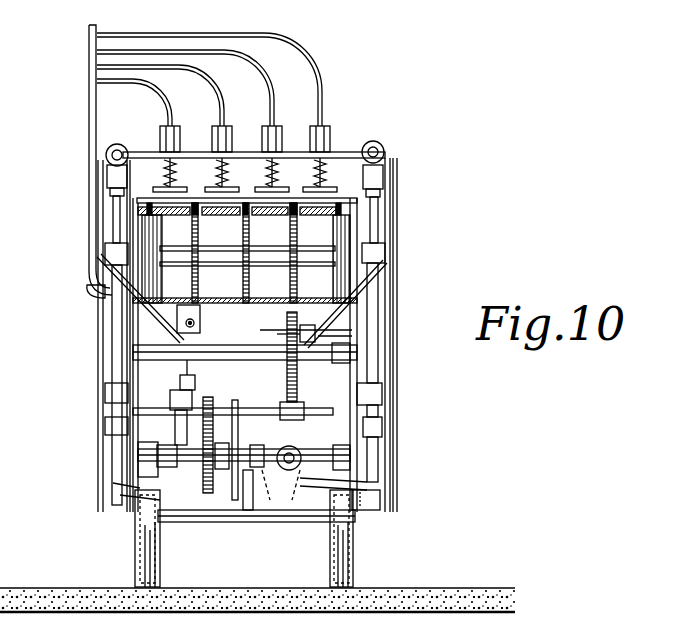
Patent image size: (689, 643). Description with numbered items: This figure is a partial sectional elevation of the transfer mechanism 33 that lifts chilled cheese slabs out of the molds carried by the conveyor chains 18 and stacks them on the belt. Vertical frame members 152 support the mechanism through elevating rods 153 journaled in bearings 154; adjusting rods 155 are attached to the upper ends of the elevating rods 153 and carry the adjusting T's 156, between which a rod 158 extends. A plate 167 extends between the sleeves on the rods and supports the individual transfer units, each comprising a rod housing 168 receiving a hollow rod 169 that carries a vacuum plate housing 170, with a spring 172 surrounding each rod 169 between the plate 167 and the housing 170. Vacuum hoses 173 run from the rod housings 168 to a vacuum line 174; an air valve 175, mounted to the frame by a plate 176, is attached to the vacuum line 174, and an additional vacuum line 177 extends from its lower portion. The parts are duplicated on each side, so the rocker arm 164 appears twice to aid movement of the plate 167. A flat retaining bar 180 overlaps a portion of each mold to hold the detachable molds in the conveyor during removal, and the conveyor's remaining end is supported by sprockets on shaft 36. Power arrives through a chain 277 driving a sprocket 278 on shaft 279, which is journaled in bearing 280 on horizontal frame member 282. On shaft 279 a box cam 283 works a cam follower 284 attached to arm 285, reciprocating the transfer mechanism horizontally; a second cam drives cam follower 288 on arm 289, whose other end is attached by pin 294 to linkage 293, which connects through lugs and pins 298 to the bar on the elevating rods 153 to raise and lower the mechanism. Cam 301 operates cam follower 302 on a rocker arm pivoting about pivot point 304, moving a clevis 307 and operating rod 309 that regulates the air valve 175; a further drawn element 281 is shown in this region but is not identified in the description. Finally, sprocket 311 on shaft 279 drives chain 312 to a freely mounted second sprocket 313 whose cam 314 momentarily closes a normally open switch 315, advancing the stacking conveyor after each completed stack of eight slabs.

The vacuum hoses 173 is at (282, 35).
The vacuum line 174 is at (88, 100).
The transfer mechanism 33 is at (138, 145).
The rod housings 168 is at (278, 126).
The plate 167 is at (343, 150).
The rod 158 is at (378, 146).
The hollow rods 169 is at (184, 175).
The vacuum plate housings 170 is at (292, 182).
The springs 172 is at (232, 165).
The adjusting T's 156 is at (384, 174).
The adjusting rods 155 is at (380, 200).
The retaining bar 180 is at (135, 203).
The rocker arm 164 is at (394, 228).
The bearings 154 is at (105, 250).
The chains 18 is at (198, 240).
The shaft 36 is at (258, 252).
The plate 176 is at (247, 268).
The vertical frame members 152 is at (147, 292).
The air valve 175 is at (200, 312).
The vacuum line 177 is at (195, 324).
The second sprocket 313 is at (296, 338).
The normally open switch 315 is at (352, 331).
The cam 314 is at (362, 352).
The elevating rods 153 is at (111, 367).
The cam follower 302 is at (177, 375).
The operating rod 309 is at (190, 377).
The arm 285 is at (233, 392).
The clevis 307 is at (190, 396).
The rod 281 is at (245, 446).
The chain 312 is at (308, 357).
The pivot point 304 is at (304, 410).
The sprocket 311 is at (294, 446).
The cam 301 is at (133, 428).
The pins 298 is at (380, 452).
The bearing 280 is at (157, 453).
The chain 277 is at (205, 500).
The sprocket 278 is at (187, 495).
The cam follower 288 is at (236, 500).
The box cam 283 is at (250, 515).
The shaft 279 is at (318, 462).
The cam follower 284 is at (206, 486).
The linkage 293 is at (380, 467).
The horizontal frame member 282 is at (350, 482).
The pin 294 is at (380, 500).
The arm 289 is at (353, 512).